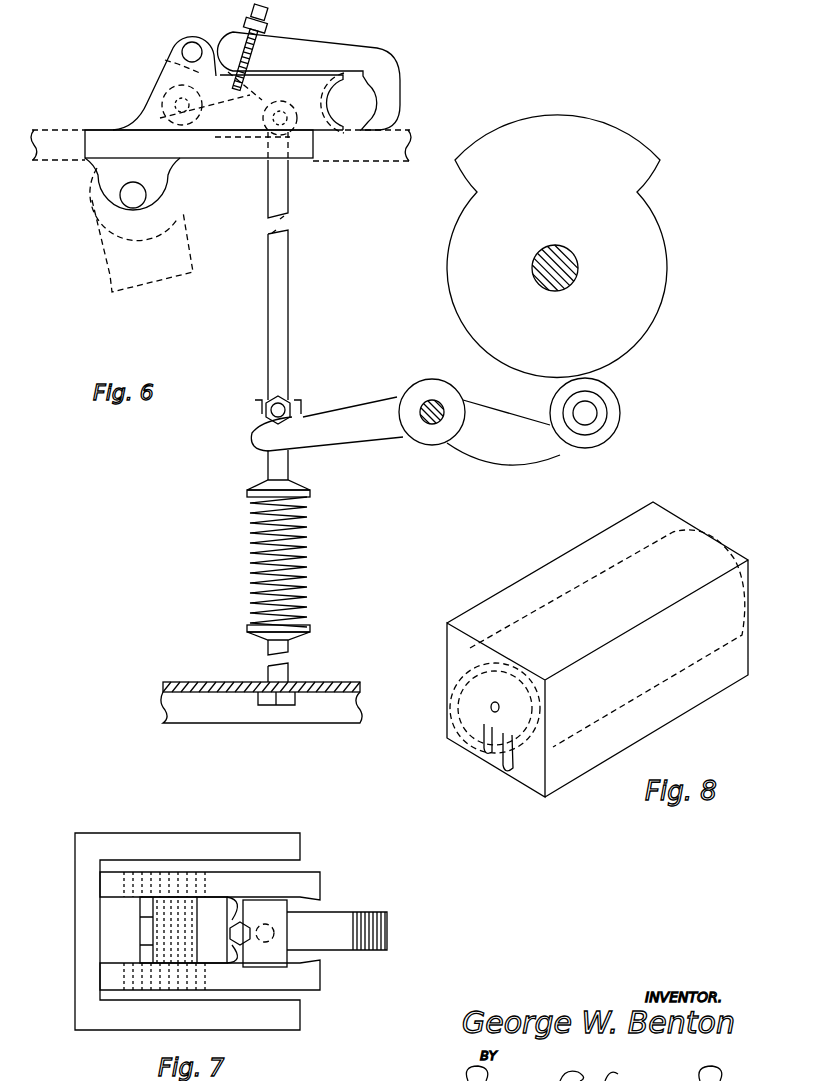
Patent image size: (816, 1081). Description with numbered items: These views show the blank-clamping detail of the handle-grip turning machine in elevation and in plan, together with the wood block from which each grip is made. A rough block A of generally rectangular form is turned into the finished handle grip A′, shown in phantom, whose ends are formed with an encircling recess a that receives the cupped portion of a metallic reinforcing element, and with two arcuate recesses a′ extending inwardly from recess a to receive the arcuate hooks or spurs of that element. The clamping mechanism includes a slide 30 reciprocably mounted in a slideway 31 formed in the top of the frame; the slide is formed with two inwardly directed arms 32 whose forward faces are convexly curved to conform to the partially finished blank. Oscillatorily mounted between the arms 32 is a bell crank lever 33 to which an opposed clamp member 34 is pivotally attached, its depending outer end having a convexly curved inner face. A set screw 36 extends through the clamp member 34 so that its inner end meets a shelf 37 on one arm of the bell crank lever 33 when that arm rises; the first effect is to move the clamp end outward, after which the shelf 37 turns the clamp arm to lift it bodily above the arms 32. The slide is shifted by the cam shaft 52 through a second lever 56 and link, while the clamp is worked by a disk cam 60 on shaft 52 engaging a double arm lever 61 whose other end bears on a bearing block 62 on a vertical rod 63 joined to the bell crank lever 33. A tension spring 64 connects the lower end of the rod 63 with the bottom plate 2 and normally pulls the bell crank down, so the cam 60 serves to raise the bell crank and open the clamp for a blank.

In FIG. 6, the bottom plate 2 is at (177, 680).
In FIG. 6, the slide 30 is at (214, 97).
In FIG. 7, the slide 30 is at (188, 840).
In FIG. 6, the slideway 31 is at (44, 130).
In FIG. 6, the inwardly directed arms 32 is at (310, 76).
In FIG. 7, the inwardly directed arms 32 is at (315, 872).
In FIG. 6, the bell crank lever 33 is at (257, 139).
In FIG. 7, the bell crank lever 33 is at (140, 927).
In FIG. 6, the clamp member 34 is at (366, 56).
In FIG. 7, the clamp member 34 is at (353, 912).
In FIG. 6, the set screw 36 is at (268, 82).
In FIG. 7, the set screw 36 is at (242, 922).
In FIG. 6, the shelf 37 is at (283, 92).
In FIG. 6, the cam shaft 52 is at (578, 274).
In FIG. 6, the second lever 56 is at (113, 276).
In FIG. 6, the disk cam 60 is at (645, 334).
In FIG. 6, the double arm lever 61 is at (493, 448).
In FIG. 6, the bearing block 62 is at (295, 404).
In FIG. 6, the vertical rod 63 is at (290, 257).
In FIG. 7, the vertical rod 63 is at (277, 928).
In FIG. 6, the tension spring 64 is at (250, 558).
In FIG. 8, the rough block A is at (497, 593).
In FIG. 8, the handle grip A′ is at (567, 582).
In FIG. 8, the encircling recess a is at (462, 672).
In FIG. 8, the arcuate recesses a′ is at (483, 742).